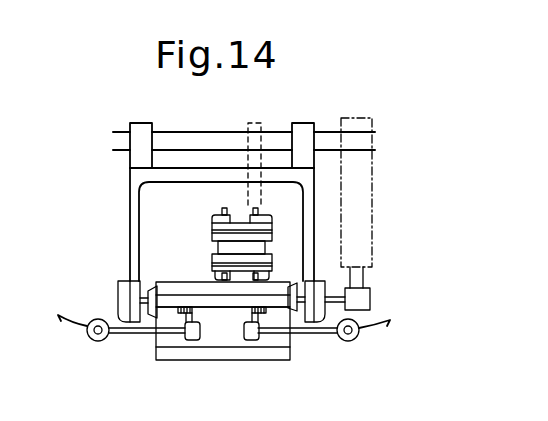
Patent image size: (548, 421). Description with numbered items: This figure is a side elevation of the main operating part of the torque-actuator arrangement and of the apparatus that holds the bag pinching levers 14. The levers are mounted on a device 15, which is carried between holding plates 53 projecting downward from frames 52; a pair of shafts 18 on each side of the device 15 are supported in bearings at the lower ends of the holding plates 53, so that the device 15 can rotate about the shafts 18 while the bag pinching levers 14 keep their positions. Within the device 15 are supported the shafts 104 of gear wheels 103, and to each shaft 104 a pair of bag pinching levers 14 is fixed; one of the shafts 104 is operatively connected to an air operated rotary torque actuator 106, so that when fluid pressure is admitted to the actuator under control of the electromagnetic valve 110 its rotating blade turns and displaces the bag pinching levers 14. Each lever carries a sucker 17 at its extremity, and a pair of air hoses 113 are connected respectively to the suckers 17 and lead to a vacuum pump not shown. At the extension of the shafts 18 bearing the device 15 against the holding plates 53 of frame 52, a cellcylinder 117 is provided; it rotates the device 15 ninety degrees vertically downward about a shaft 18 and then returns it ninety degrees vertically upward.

The bag pinching lever 14 is at (122, 335).
The device 15 is at (167, 283).
The sucker 17 is at (84, 338).
The shaft 18 is at (123, 312).
The frame 52 is at (128, 202).
The holding plate 53 is at (124, 287).
The gear wheel 103 is at (186, 340).
The shaft 104 is at (247, 318).
The torque actuator 106 is at (273, 235).
The electromagnetic valve 110 is at (259, 122).
The air hose 113 is at (62, 321).
The cellcylinder 117 is at (373, 208).